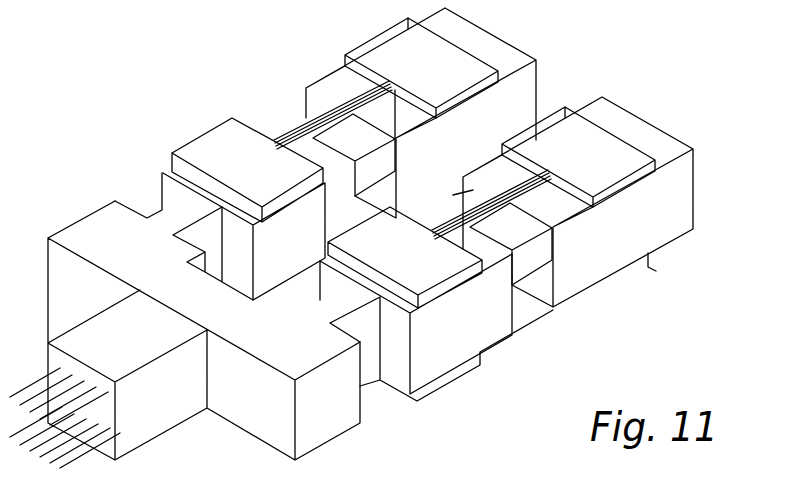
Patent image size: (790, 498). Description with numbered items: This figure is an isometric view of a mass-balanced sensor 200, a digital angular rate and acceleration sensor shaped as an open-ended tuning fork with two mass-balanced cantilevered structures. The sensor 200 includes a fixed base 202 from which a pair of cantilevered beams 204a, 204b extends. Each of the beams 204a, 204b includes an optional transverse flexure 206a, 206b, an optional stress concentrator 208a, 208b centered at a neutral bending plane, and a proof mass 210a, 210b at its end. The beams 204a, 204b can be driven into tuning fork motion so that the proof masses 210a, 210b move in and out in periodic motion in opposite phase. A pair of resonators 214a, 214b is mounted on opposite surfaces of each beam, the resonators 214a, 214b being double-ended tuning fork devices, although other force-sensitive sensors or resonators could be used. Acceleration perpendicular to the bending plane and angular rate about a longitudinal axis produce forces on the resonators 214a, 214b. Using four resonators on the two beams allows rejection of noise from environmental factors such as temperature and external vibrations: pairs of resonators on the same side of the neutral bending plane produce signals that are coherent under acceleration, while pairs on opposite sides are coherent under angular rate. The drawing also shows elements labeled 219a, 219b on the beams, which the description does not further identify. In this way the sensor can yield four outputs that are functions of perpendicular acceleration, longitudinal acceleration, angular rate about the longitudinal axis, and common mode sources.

The mass-balanced sensor 200 is at (217, 58).
The fixed base 202 is at (153, 418).
The cantilevered beam 204a is at (263, 125).
The cantilevered beam 204b is at (447, 343).
The transverse flexure 206a is at (153, 212).
The transverse flexure 206b is at (368, 310).
The stress concentrator 208a is at (362, 168).
The stress concentrator 208b is at (530, 287).
The proof mass 210a is at (480, 42).
The proof mass 210b is at (640, 124).
The resonator 214a is at (303, 122).
The resonator 214b is at (518, 197).
The lead 219a is at (505, 188).
The lead 219b is at (652, 268).